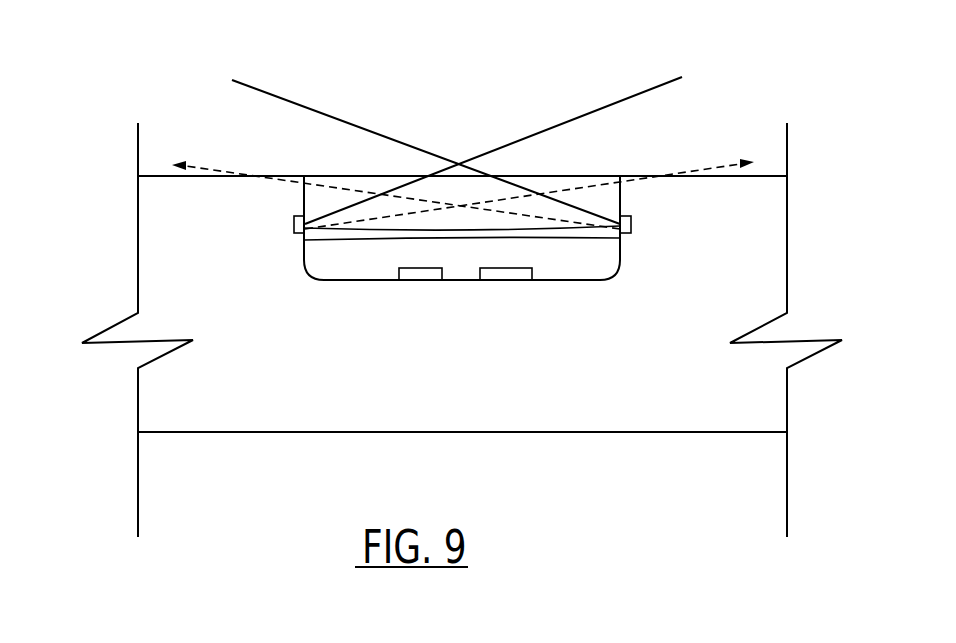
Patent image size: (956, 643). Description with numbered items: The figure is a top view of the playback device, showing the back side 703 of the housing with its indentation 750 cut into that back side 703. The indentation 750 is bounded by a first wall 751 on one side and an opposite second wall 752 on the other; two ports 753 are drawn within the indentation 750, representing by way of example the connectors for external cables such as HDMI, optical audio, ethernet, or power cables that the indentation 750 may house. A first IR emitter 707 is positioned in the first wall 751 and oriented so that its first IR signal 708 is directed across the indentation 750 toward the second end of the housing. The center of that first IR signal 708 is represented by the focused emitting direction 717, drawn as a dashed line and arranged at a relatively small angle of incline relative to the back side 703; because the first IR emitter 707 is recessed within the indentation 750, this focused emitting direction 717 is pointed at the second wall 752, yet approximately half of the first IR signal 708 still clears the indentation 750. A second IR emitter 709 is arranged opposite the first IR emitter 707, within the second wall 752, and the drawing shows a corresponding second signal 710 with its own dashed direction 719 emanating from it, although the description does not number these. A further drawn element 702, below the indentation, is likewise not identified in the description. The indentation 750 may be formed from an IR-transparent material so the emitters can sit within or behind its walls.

The lower structural member 702 is at (200, 433).
The back side 703 is at (178, 177).
The first IR emitter 707 is at (294, 223).
The first IR signal 708 is at (612, 103).
The second IR emitter 709 is at (632, 223).
The second beam 710 is at (297, 103).
The focused emitting direction 717 is at (722, 163).
The second reflected beam 719 is at (215, 167).
The indentation 750 is at (462, 281).
The first wall 751 is at (303, 250).
The second wall 752 is at (622, 252).
The ports 753 is at (418, 274).